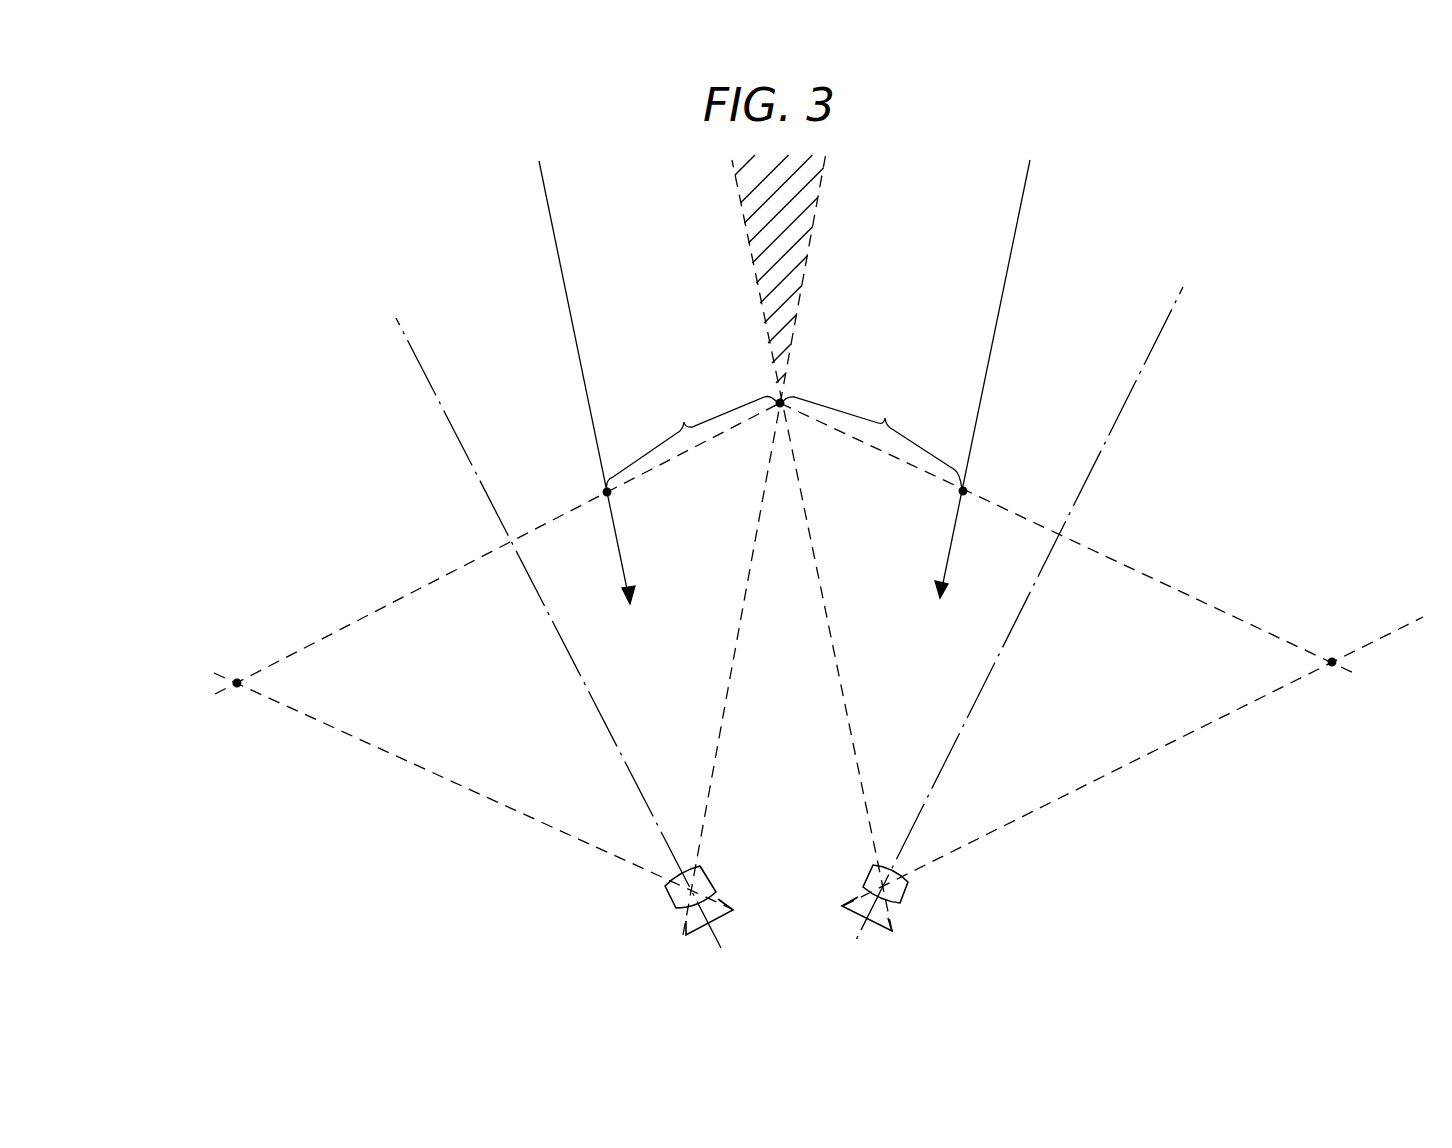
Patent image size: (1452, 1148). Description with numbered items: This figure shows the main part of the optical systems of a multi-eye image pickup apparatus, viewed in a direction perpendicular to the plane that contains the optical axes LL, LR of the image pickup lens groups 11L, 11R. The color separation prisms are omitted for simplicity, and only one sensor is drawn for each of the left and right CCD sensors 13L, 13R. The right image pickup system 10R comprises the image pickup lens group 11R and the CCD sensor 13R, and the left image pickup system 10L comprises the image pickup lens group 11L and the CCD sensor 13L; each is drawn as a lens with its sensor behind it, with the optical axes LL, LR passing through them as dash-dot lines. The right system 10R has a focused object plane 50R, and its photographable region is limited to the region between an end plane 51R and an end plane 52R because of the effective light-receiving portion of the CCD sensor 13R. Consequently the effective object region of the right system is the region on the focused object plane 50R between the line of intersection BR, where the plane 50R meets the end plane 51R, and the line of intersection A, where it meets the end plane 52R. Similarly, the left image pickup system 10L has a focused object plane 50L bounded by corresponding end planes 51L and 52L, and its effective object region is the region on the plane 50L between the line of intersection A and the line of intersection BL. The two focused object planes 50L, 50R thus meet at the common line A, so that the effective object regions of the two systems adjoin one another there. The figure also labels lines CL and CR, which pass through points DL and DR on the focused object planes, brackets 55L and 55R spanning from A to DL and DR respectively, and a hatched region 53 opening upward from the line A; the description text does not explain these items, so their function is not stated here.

The hatched region where object A cannot be imaged by both cameras 53 is at (812, 243).
The line of intersection A is at (782, 401).
The left camera sight line CL is at (556, 242).
The right camera sight line CR is at (1015, 236).
The optical axis LL is at (436, 397).
The optical axis LR is at (1130, 396).
The left intersection point DL is at (605, 491).
The right intersection point DR is at (964, 490).
The left distance segment 55L is at (693, 440).
The right distance segment 55R is at (871, 438).
The focused object plane 50L is at (344, 626).
The focused object plane 50R is at (1158, 580).
The left camera line of sight to A 51L is at (747, 596).
The end plane 51R is at (1170, 744).
The left camera field boundary line 52L is at (405, 760).
The end plane 52R is at (841, 700).
The line of intersection BL is at (237, 687).
The line of intersection BR is at (1332, 666).
The left image pickup system 10L is at (634, 911).
The right image pickup system 10R is at (936, 909).
The image pickup lens group 11L is at (664, 892).
The image pickup lens group 11R is at (904, 888).
The CCD sensor 13L is at (584, 882).
The CCD sensor 13R is at (888, 928).